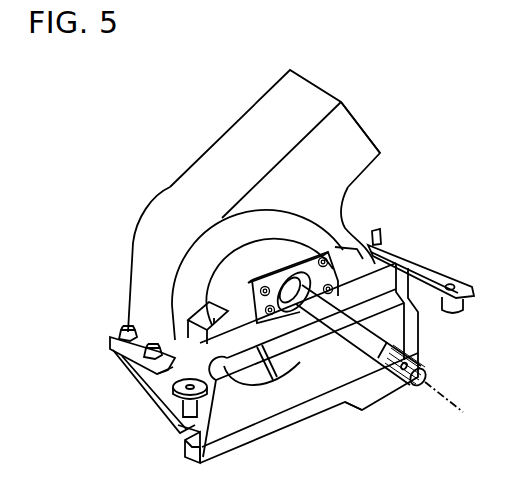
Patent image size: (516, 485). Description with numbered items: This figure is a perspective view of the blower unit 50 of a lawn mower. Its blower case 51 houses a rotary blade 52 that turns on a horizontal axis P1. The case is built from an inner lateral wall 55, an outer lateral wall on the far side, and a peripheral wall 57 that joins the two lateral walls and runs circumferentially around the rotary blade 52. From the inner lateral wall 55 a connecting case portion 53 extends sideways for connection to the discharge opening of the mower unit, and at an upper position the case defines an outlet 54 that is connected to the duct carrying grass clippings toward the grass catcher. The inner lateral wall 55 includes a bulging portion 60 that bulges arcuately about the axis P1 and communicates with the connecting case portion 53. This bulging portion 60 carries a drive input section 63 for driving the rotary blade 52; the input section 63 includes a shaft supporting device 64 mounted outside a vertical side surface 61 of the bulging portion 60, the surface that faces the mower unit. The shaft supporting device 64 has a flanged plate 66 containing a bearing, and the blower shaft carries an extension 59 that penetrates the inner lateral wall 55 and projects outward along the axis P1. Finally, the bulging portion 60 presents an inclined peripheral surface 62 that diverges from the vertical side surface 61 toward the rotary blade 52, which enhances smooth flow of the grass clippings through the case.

The steering apparatus 50 is at (210, 122).
The blower case 51 is at (170, 187).
The rotary blade 52 is at (259, 375).
The connecting case portion 53 is at (372, 250).
The outlet 54 is at (353, 118).
The inner lateral wall 55 is at (352, 205).
The peripheral wall 57 is at (270, 112).
The extension 59 is at (345, 403).
The bulging portion 60 is at (217, 272).
The vertical side surface 61 is at (295, 247).
The inclined peripheral surface 62 is at (221, 217).
The drive input section 63 is at (314, 245).
The shaft supporting device 64 is at (297, 302).
The flanged plate 66 is at (277, 281).
The horizontal axis P1 is at (431, 392).